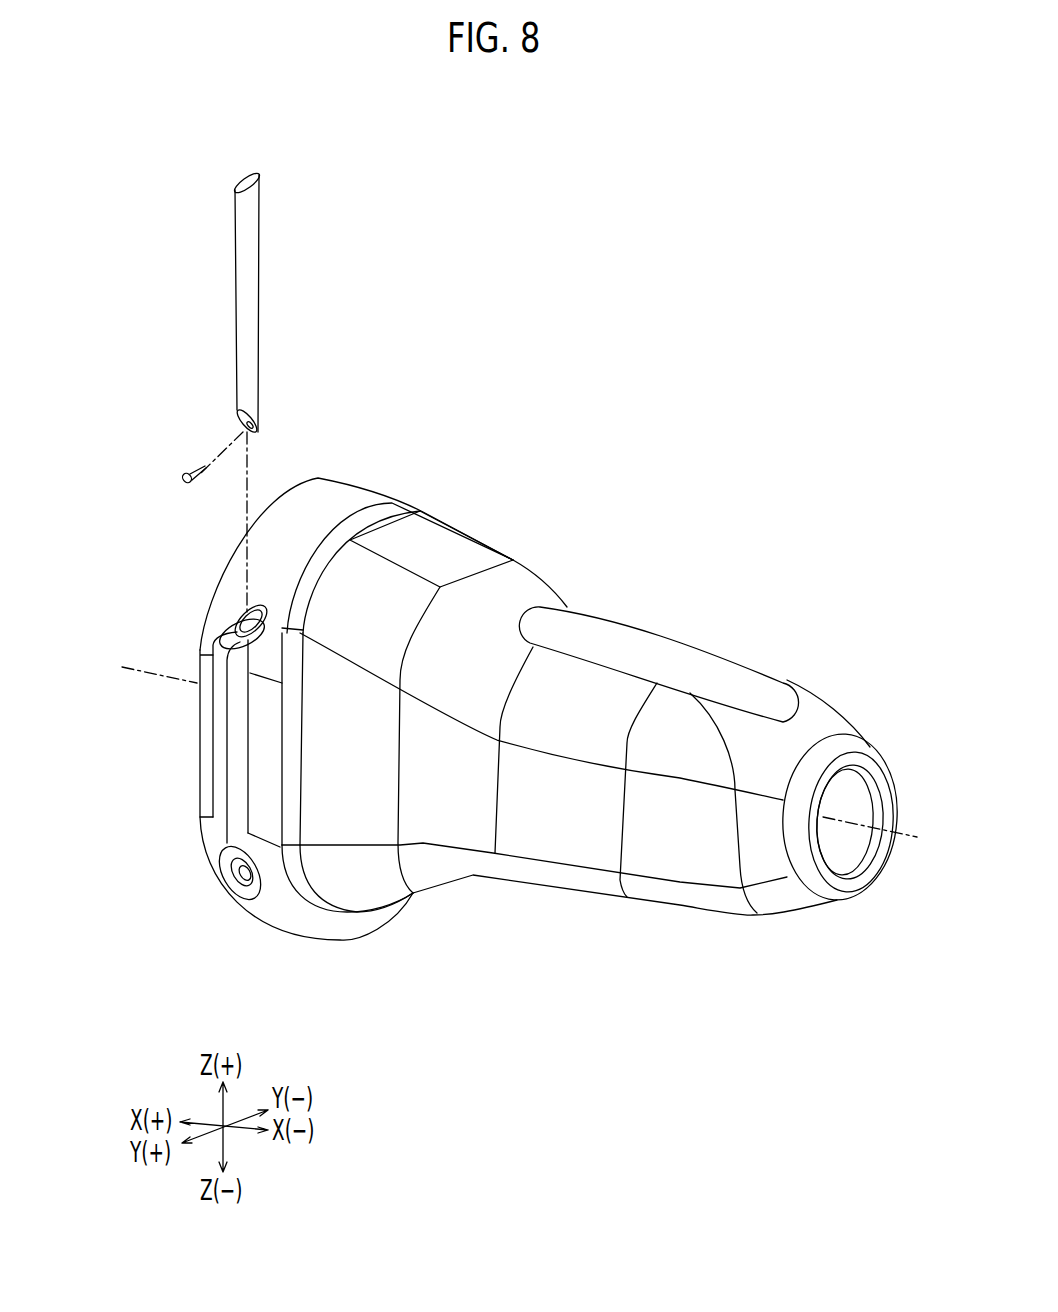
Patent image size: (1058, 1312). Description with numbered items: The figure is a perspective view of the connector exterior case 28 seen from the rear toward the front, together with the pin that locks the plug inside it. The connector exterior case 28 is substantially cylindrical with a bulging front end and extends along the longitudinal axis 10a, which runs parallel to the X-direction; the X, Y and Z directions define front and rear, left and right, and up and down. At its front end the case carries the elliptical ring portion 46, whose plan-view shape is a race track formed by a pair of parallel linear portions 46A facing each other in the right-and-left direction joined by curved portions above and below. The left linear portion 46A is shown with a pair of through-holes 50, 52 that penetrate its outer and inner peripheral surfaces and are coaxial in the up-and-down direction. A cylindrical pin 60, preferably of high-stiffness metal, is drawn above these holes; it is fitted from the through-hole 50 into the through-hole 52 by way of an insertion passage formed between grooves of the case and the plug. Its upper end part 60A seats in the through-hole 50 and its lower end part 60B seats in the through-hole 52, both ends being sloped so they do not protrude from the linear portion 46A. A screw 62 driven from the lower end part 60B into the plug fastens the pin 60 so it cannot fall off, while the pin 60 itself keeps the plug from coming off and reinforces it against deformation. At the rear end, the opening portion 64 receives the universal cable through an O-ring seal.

The longitudinal axis 10a is at (498, 743).
The connector exterior case 28 is at (598, 568).
The elliptical ring portion 46 is at (359, 469).
The linear portion 46A is at (203, 738).
The through-hole 50 is at (238, 632).
The through-hole 52 is at (240, 870).
The pin 60 is at (255, 286).
The upper end part 60A is at (247, 184).
The lower end part 60B is at (240, 424).
The screw 62 is at (196, 482).
The opening portion 64 is at (856, 790).